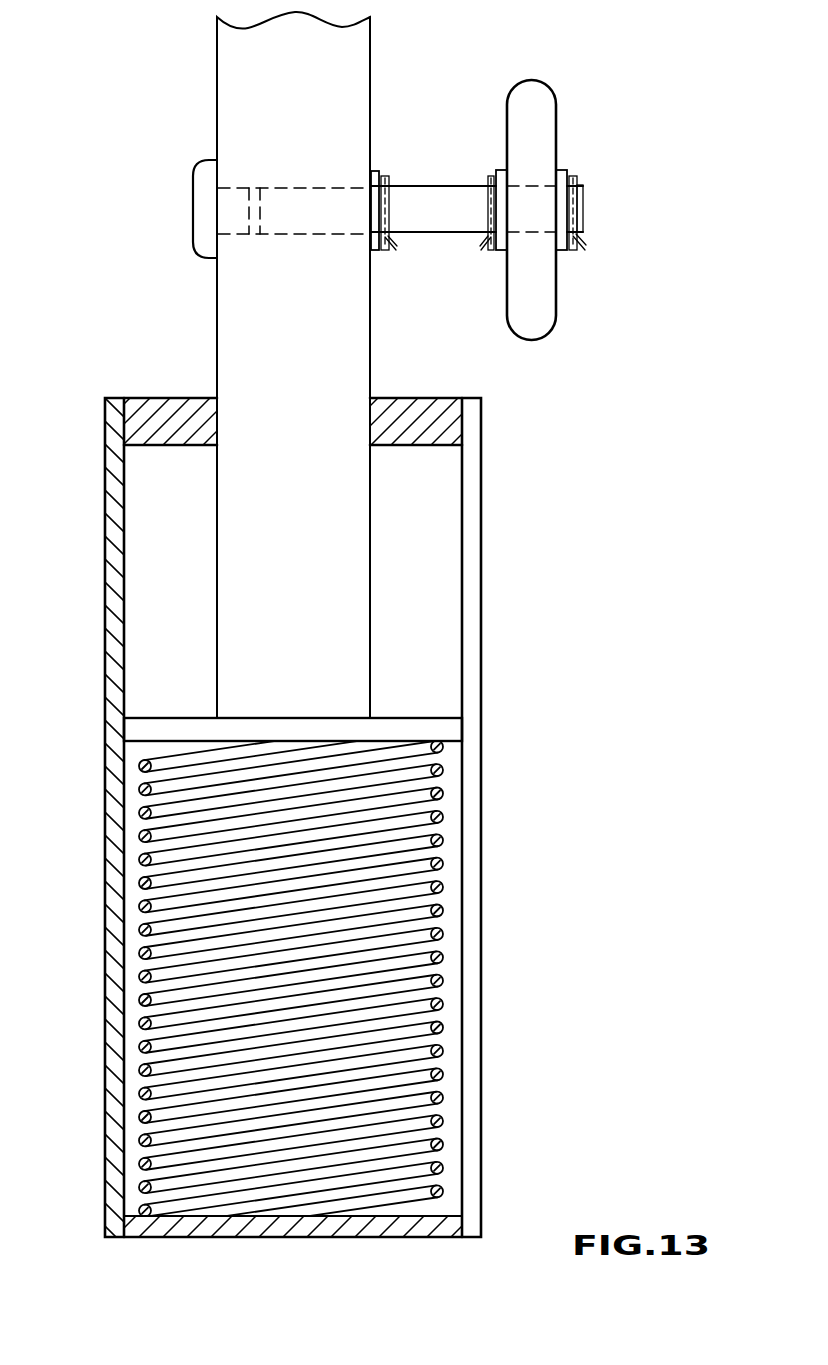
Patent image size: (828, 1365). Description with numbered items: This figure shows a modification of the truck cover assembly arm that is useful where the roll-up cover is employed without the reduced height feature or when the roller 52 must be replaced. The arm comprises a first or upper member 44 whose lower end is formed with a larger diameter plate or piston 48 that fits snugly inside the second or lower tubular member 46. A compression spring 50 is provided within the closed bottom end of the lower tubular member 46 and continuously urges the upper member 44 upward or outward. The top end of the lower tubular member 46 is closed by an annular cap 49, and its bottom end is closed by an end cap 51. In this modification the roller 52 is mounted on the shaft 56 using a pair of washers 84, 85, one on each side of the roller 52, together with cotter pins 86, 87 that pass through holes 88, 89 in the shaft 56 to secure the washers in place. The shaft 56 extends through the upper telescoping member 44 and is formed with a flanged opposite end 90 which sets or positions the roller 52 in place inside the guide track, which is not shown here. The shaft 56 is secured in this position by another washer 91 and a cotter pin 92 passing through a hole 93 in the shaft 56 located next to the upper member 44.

The first or upper member 44 is at (237, 339).
The second or lower tubular member 46 is at (472, 560).
The plate or piston 48 is at (141, 730).
The annular cap 49 is at (420, 410).
The compression spring 50 is at (440, 1028).
The end cap 51 is at (290, 1238).
The roller 52 is at (527, 324).
The shaft 56 is at (447, 179).
The washer 84 is at (565, 174).
The washer 85 is at (488, 251).
The cotter pin 86 is at (585, 249).
The cotter pin 87 is at (494, 180).
The hole 88 is at (580, 218).
The hole 89 is at (491, 204).
The flanged opposite end 90 is at (192, 189).
The washer 91 is at (378, 172).
The cotter pin 92 is at (394, 245).
The hole 93 is at (393, 221).